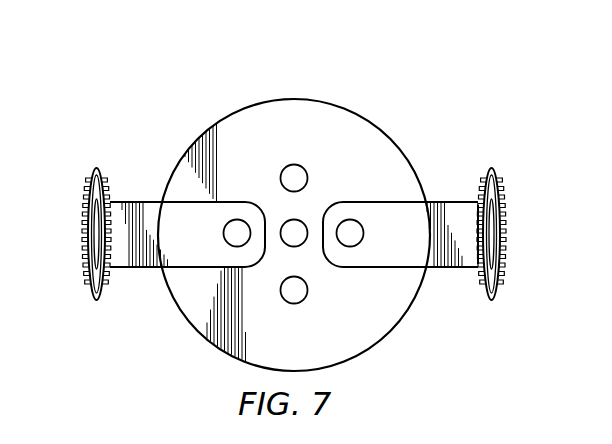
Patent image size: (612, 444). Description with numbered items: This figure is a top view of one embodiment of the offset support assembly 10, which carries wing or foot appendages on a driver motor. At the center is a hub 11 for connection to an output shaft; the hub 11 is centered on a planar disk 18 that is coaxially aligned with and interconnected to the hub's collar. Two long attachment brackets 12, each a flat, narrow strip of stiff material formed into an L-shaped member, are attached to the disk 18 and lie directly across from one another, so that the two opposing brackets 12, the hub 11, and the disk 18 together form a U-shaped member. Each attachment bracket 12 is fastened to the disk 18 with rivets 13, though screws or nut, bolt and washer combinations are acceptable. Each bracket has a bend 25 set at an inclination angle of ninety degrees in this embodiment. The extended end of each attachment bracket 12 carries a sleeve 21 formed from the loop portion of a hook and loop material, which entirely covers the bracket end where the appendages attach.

The offset support assembly 10 is at (358, 66).
The planar disk 18 is at (295, 98).
The hub 11 is at (290, 222).
The attachment bracket 12 is at (153, 201).
The rivets 13 is at (222, 231).
The sleeve 21 is at (82, 237).
The bend 25 is at (478, 217).